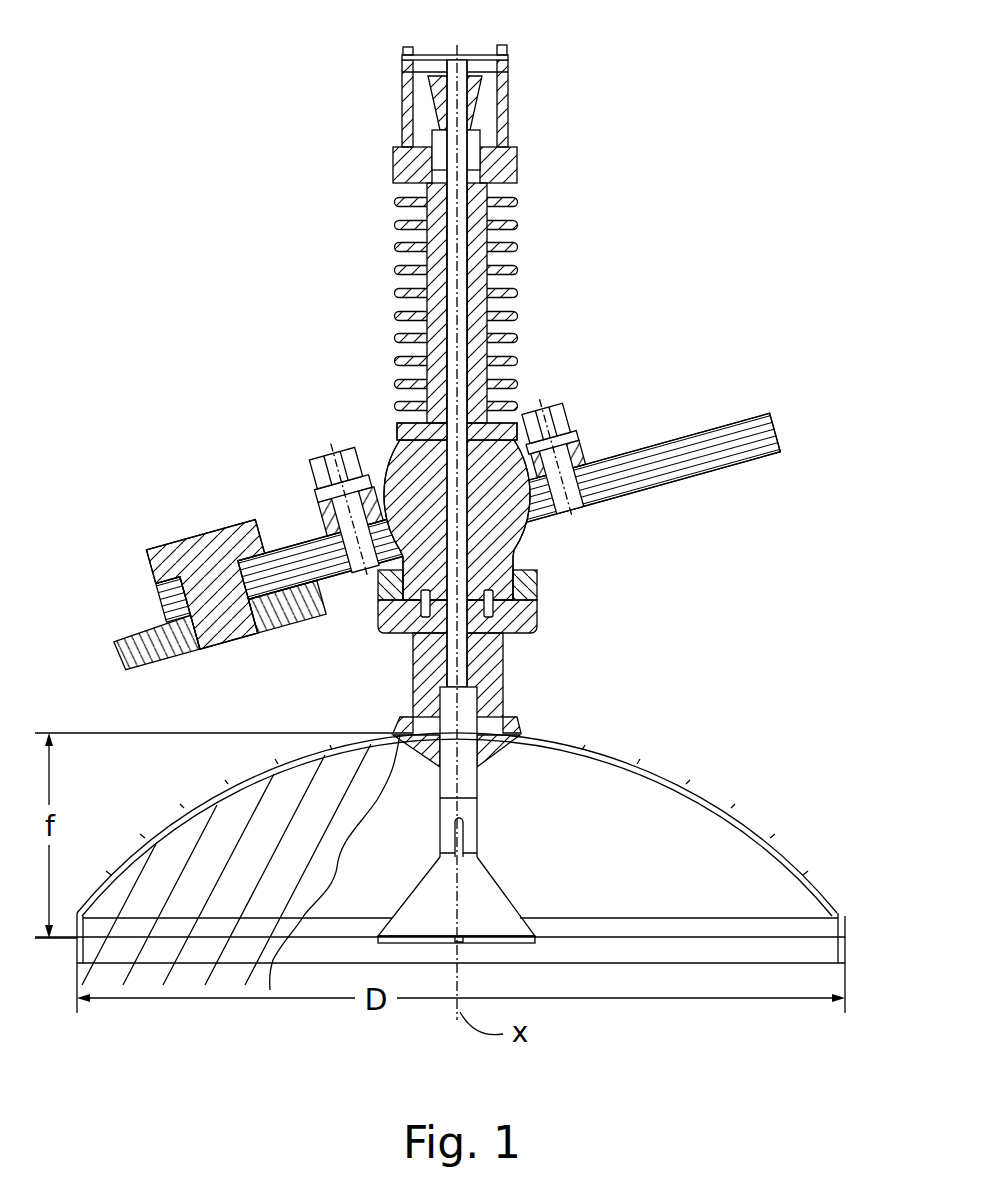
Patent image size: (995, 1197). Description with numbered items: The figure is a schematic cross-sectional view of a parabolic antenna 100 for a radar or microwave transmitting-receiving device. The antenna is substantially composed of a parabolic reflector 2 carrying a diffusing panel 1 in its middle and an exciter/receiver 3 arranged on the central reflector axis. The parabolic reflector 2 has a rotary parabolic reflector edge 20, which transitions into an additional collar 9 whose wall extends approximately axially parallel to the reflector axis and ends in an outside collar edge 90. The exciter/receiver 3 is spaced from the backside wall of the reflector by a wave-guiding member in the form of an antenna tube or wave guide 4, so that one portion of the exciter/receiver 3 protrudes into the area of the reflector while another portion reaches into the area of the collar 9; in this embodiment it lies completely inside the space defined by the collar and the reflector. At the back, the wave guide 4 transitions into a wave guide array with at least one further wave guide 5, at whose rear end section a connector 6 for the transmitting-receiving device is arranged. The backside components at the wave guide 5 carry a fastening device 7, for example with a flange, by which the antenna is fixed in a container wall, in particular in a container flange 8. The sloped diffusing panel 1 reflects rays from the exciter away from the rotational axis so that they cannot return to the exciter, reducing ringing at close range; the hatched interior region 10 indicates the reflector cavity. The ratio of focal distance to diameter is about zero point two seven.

The parabolic antenna 100 is at (216, 260).
The diffusing panel 1 is at (502, 733).
The parabolic reflector 2 is at (657, 772).
The exciter/receiver 3 is at (497, 913).
The wave guide 4 is at (478, 813).
The wave guide 5 is at (487, 307).
The connector 6 is at (502, 108).
The fastening device 7 is at (300, 473).
The container flange 8 is at (143, 630).
The collar 9 is at (828, 943).
The reflector interior 10 is at (220, 827).
The parabolic reflector edge 20 is at (697, 917).
The collar edge 90 is at (768, 965).